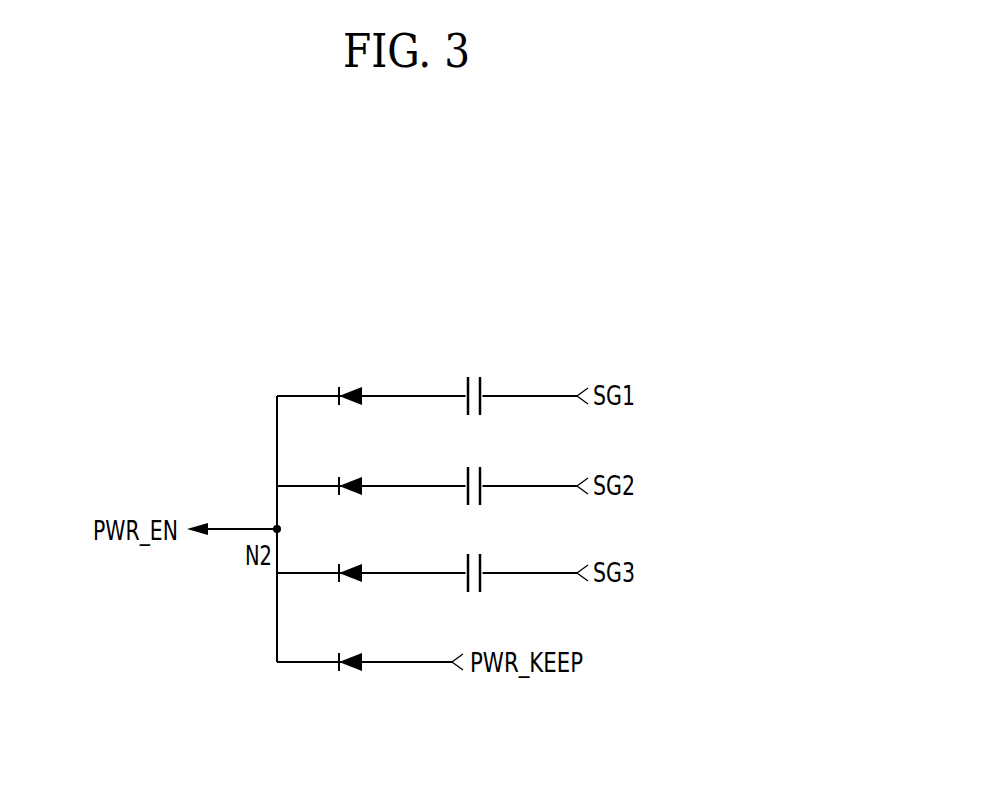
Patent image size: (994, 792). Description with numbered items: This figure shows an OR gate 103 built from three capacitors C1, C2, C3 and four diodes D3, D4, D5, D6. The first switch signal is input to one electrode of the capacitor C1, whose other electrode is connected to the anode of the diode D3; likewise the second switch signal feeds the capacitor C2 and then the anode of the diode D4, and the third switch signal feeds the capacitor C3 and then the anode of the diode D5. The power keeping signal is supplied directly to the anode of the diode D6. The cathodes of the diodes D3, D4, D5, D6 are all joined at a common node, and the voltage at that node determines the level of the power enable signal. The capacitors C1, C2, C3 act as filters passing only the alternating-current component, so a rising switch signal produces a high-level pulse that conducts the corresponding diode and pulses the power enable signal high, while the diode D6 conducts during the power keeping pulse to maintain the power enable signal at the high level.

The OR gate 103 is at (596, 349).
The diode D3 is at (349, 378).
The diode D4 is at (349, 468).
The diode D5 is at (349, 555).
The diode D6 is at (349, 644).
The capacitor C1 is at (473, 382).
The capacitor C2 is at (473, 472).
The capacitor C3 is at (473, 559).